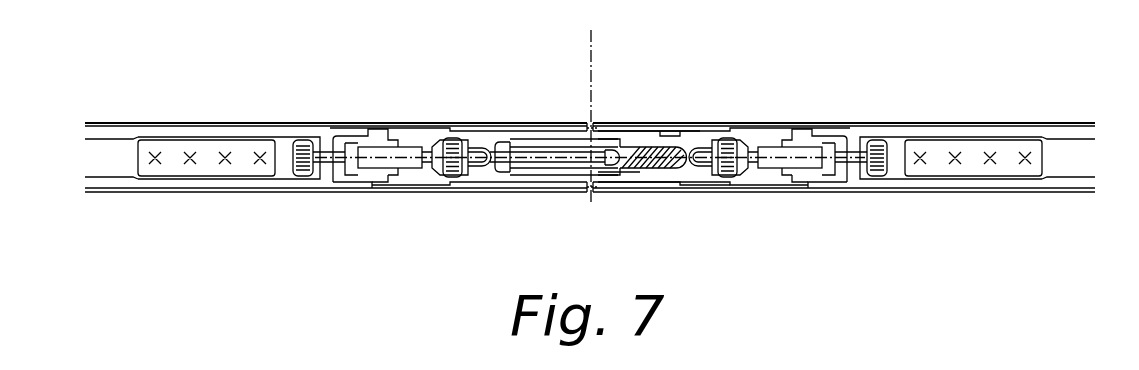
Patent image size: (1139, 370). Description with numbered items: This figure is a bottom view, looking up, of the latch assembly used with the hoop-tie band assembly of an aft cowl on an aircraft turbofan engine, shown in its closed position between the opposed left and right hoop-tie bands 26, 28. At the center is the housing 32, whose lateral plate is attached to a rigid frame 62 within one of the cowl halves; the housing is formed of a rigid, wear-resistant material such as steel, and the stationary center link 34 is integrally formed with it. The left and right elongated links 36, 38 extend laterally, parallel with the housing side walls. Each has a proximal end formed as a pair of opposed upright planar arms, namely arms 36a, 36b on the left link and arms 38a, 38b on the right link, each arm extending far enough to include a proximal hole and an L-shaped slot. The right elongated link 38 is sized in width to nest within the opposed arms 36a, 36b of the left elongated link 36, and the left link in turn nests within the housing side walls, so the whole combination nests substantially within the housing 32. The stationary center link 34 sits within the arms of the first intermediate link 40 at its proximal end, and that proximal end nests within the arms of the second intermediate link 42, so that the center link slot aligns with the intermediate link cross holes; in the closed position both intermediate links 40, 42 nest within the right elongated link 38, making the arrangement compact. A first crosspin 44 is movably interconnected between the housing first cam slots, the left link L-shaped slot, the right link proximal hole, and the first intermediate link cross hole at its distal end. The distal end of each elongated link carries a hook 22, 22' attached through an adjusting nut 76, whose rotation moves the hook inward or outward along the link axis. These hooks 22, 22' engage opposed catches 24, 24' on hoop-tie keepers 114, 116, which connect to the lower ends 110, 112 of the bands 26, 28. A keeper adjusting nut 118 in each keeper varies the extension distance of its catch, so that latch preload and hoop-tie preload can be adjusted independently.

The hook 22 is at (395, 118).
The hook 22' is at (796, 111).
The catch 24 is at (350, 108).
The catch 24' is at (849, 115).
The left hoop-tie band 26 is at (114, 150).
The right hoop-tie band 28 is at (1065, 150).
The housing 32 is at (674, 125).
The stationary center link 34 is at (612, 140).
The left elongated link 36 is at (480, 148).
The arm 36a is at (652, 130).
The arm 36b is at (670, 170).
The right elongated link 38 is at (720, 150).
The arm 38a is at (660, 130).
The arm 38b is at (608, 173).
The first intermediate link 40 is at (528, 140).
The second intermediate link 42 is at (600, 135).
The first crosspin 44 is at (523, 160).
The rigid frame 62 is at (560, 118).
The adjusting nut 76 is at (452, 170).
The lower end 110 is at (280, 143).
The lower end 112 is at (905, 145).
The hoop-tie keeper 114 is at (340, 147).
The hoop-tie keeper 116 is at (845, 147).
The keeper adjusting nut 118 is at (302, 165).